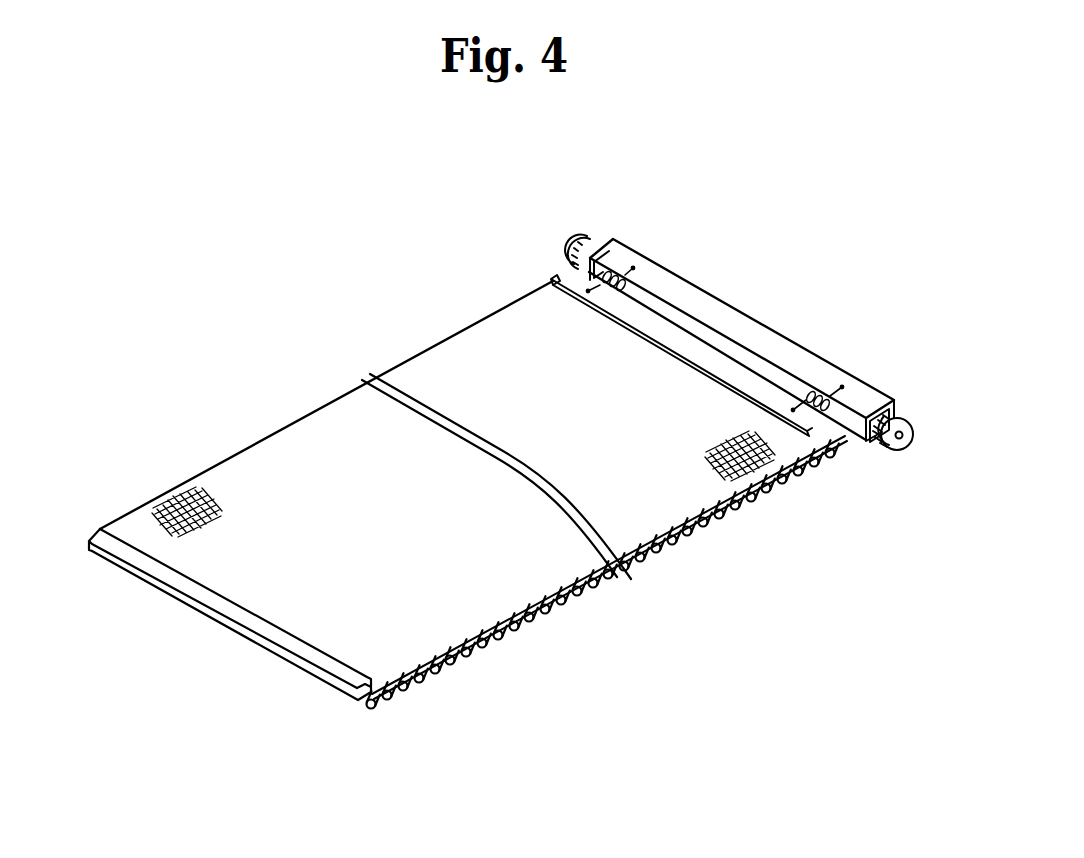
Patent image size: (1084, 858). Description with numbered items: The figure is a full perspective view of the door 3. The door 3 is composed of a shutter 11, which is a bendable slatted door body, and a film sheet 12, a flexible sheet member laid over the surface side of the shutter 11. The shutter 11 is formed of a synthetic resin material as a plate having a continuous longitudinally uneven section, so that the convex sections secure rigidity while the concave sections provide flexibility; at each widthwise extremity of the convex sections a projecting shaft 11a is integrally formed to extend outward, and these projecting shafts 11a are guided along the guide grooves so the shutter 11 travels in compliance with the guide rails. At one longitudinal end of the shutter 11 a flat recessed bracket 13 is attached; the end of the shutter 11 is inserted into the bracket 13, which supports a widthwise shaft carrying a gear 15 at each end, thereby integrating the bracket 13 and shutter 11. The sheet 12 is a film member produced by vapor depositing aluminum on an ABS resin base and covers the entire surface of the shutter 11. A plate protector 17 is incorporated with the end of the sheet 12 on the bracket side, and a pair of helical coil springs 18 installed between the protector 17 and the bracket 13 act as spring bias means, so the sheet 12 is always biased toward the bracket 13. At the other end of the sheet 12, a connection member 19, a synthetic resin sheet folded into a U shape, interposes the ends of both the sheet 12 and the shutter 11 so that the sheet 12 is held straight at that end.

The door 3 is at (776, 209).
The shutter 11 is at (845, 443).
The projecting shaft 11a is at (788, 480).
The film sheet 12 is at (453, 335).
The bracket 13 is at (697, 288).
The gear 15 is at (586, 238).
The plate protector 17 is at (738, 362).
The helical coil spring 18 is at (624, 279).
The connection member 19 is at (180, 597).